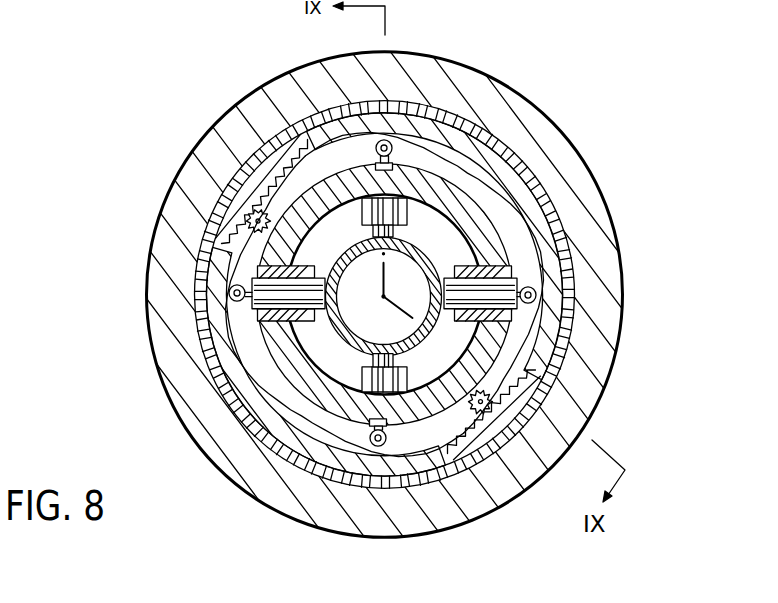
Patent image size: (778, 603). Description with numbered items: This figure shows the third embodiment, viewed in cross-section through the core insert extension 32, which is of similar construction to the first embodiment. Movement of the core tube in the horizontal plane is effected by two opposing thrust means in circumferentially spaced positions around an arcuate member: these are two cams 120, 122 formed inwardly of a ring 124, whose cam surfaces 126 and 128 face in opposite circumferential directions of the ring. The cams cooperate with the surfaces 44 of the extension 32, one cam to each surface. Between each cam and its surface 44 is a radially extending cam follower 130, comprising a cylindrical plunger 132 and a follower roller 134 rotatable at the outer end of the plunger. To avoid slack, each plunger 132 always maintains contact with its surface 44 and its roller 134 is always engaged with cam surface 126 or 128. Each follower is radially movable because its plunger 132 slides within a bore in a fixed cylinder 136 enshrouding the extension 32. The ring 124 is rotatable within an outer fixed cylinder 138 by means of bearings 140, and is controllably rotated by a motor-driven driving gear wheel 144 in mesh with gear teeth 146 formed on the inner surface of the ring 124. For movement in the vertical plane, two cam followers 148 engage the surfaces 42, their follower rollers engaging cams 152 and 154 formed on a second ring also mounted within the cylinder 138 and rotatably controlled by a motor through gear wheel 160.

The core insert extension 32 is at (374, 256).
The surfaces 42 is at (407, 234).
The surfaces 44 is at (338, 306).
The cam 120 is at (214, 366).
The cam 122 is at (530, 350).
The ring 124 is at (252, 430).
The cam surface 126 is at (238, 338).
The cam surface 128 is at (540, 312).
The cam follower 130 is at (505, 262).
The cylindrical plunger 132 is at (250, 296).
The follower roller 134 is at (228, 289).
The cylinder 136 is at (495, 232).
The outer fixed cylinder 138 is at (550, 120).
The bearings 140 is at (462, 104).
The driving gear wheel 144 is at (228, 252).
The gear teeth 146 is at (274, 183).
The cam followers 148 is at (375, 150).
The cam 152 is at (430, 150).
The cam 154 is at (447, 498).
The gear wheel 160 is at (528, 372).